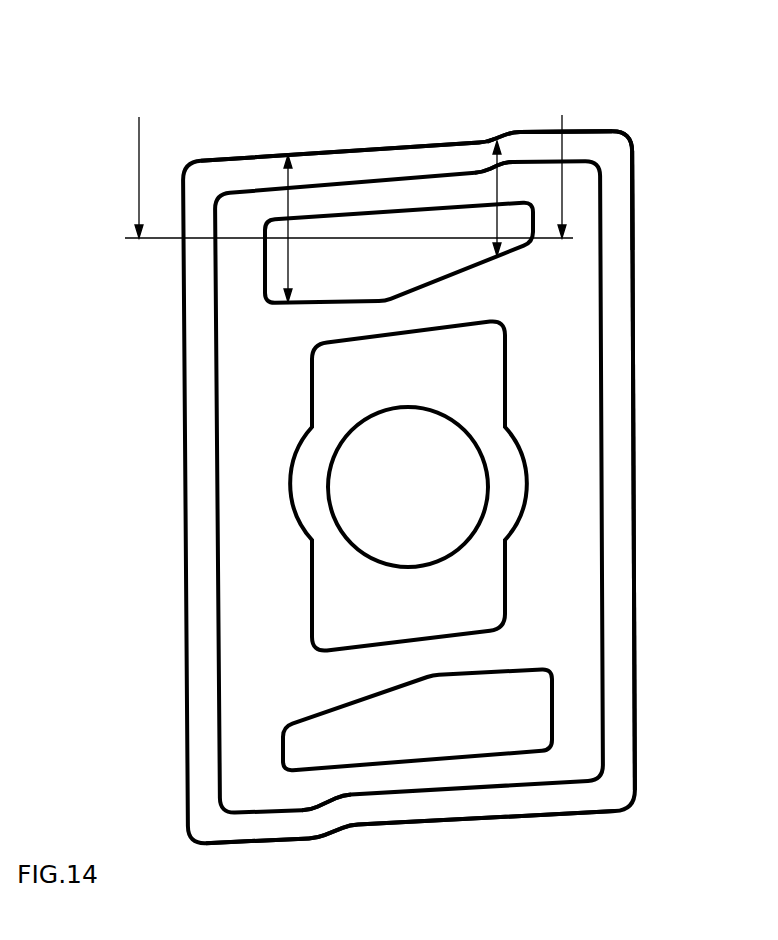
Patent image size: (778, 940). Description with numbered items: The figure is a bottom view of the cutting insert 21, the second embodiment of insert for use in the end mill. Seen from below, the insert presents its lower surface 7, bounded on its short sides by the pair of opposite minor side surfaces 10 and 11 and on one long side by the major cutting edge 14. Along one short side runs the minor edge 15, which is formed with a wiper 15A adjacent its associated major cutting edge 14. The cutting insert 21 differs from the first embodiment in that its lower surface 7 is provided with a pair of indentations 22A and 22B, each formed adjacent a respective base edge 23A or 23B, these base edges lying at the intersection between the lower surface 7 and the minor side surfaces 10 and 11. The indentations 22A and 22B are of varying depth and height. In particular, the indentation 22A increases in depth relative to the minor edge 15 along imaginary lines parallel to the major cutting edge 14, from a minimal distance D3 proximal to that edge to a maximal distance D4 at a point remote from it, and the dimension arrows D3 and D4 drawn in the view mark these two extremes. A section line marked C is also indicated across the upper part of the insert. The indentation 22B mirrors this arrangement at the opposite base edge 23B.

The minor side surface 10 is at (215, 82).
The cutting insert 21 is at (661, 102).
The major cutting edge 14 is at (632, 307).
The minor side surface 11 is at (456, 858).
The minor edge 15 is at (400, 150).
The wiper 15A is at (541, 132).
The base edge 23A is at (518, 163).
The base edge 23B is at (520, 788).
The lower surface 7 is at (265, 583).
The indentation 22A is at (399, 253).
The indentation 22B is at (467, 737).
The section line C is at (349, 163).
The maximal distance D4 is at (287, 260).
The minimal distance D3 is at (502, 230).